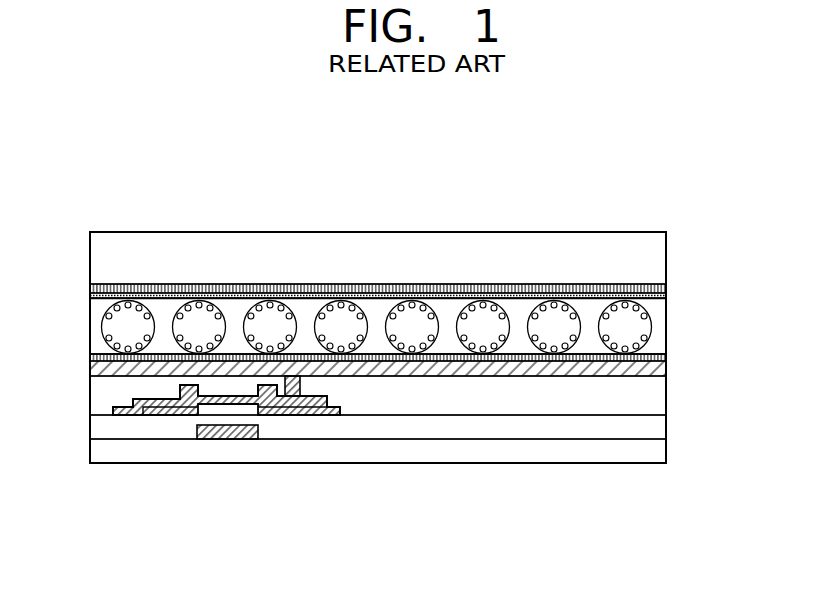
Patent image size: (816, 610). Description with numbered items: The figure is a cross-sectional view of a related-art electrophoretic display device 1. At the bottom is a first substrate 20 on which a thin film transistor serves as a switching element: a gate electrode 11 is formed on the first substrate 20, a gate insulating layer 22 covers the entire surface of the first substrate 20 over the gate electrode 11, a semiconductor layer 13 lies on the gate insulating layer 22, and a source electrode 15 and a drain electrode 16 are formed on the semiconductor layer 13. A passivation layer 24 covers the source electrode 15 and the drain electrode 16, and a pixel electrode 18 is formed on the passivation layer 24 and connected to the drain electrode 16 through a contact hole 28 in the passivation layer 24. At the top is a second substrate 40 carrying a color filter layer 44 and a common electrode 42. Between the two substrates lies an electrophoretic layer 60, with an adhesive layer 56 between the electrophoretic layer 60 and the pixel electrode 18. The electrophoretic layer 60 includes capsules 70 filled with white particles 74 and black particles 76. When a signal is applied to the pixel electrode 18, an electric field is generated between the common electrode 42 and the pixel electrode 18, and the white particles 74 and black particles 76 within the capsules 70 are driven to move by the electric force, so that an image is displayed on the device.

The electrophoretic display device 1 is at (336, 170).
The gate electrode 11 is at (233, 430).
The semiconductor layer 13 is at (168, 415).
The source electrode 15 is at (122, 415).
The drain electrode 16 is at (297, 415).
The pixel electrode 18 is at (650, 368).
The first substrate 20 is at (650, 454).
The gate insulating layer 22 is at (650, 427).
The passivation layer 24 is at (642, 400).
The contact hole 28 is at (300, 382).
The second substrate 40 is at (650, 250).
The common electrode 42 is at (648, 288).
The color filter layer 44 is at (98, 297).
The adhesive layer 56 is at (98, 359).
The electrophoretic layer 60 is at (592, 307).
The capsules 70 is at (638, 327).
The white particles 74 is at (648, 299).
The black particles 76 is at (648, 357).